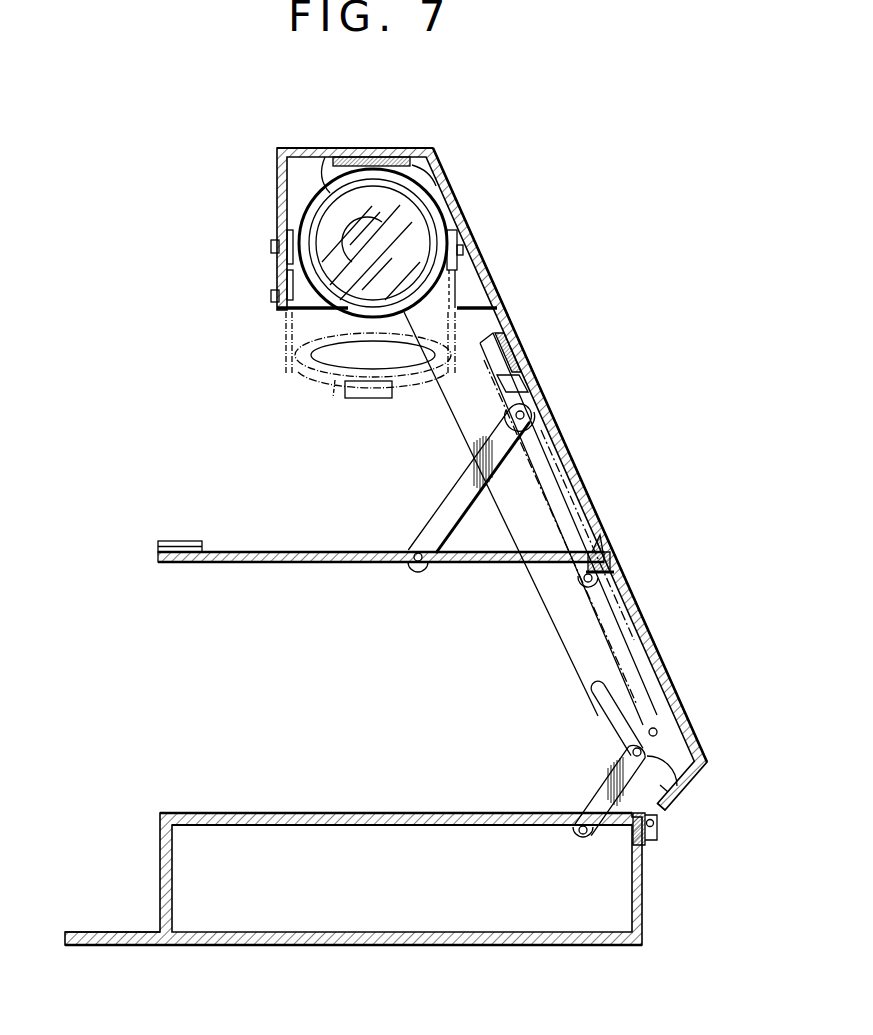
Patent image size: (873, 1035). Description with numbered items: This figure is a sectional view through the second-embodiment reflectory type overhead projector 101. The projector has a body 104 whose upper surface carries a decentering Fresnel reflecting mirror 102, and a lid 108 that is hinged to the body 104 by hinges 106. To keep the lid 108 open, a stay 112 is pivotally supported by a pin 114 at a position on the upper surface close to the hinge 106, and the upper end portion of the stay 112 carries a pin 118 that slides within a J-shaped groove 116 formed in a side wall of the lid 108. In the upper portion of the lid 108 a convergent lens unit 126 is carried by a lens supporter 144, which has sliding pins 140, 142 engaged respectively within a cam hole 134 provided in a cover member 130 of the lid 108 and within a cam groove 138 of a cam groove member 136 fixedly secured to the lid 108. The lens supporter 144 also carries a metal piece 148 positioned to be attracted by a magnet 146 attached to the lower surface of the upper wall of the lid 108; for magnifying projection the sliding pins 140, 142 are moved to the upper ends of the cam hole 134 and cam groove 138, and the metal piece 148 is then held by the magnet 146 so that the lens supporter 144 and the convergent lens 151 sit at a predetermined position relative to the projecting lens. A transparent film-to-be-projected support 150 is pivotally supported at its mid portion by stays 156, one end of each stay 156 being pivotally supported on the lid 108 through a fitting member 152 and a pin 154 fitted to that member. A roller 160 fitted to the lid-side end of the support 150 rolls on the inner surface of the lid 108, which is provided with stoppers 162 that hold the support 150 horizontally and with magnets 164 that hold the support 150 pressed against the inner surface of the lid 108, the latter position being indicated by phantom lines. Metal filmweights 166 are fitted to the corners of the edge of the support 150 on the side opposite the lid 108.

The reflectory type overhead projector 101 is at (235, 364).
The decentering Fresnel reflecting mirror 102 is at (410, 812).
The body 104 is at (430, 947).
The hinges 106 is at (656, 823).
The lid 108 is at (530, 346).
The stay 112 is at (606, 782).
The pin 114 is at (582, 838).
The J-shaped groove 116 is at (593, 700).
The pin 118 is at (670, 780).
The convergent lens unit 126 is at (300, 386).
The cover member 130 is at (278, 168).
The cam hole 134 is at (280, 283).
The cam groove member 136 is at (482, 300).
The cam groove 138 is at (468, 272).
The sliding pin 140 is at (275, 240).
The sliding pin 142 is at (466, 246).
The lens supporter 144 is at (327, 150).
The magnet 146 is at (378, 157).
The metal piece 148 is at (425, 166).
The film-to-be-projected support 150 is at (323, 552).
The convergent lens 151 is at (420, 212).
The fitting member 152 is at (523, 388).
The pin 154 is at (528, 417).
The stays 156 is at (466, 486).
The roller 160 is at (606, 546).
The stoppers 162 is at (615, 570).
The magnets 164 is at (518, 350).
The metal filmweights 166 is at (185, 541).